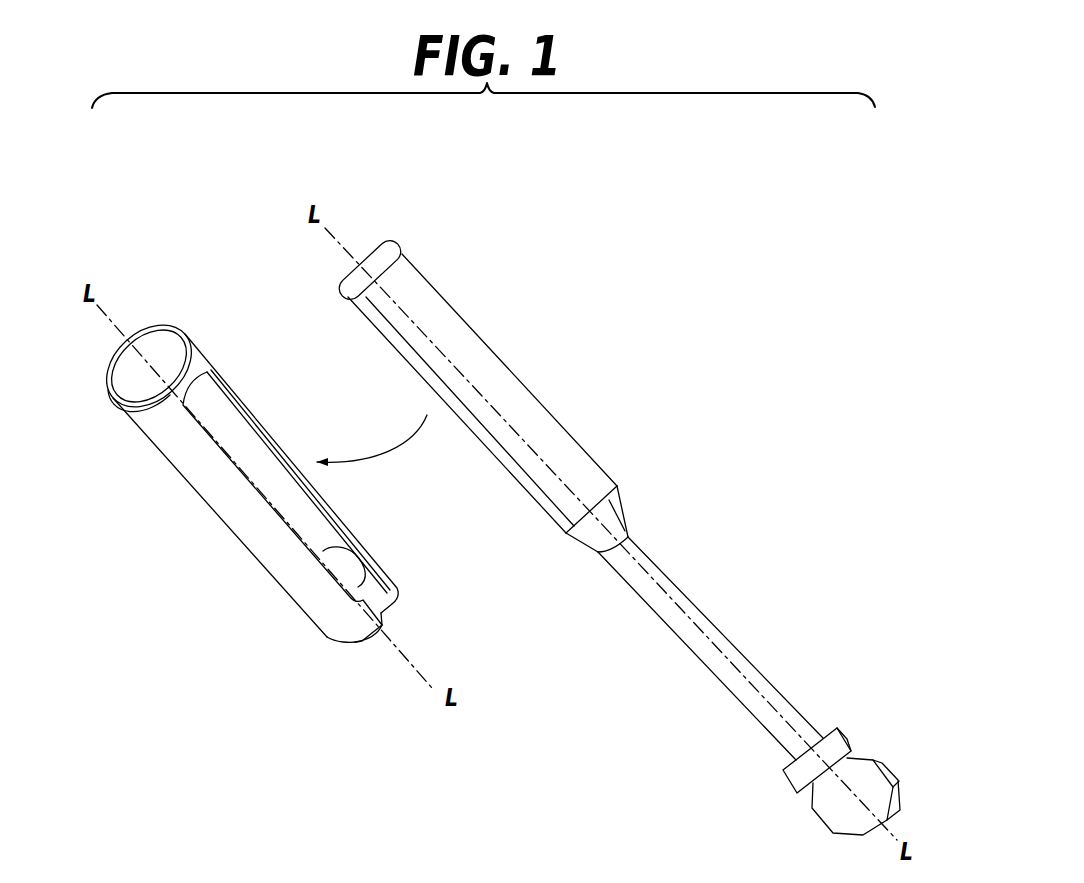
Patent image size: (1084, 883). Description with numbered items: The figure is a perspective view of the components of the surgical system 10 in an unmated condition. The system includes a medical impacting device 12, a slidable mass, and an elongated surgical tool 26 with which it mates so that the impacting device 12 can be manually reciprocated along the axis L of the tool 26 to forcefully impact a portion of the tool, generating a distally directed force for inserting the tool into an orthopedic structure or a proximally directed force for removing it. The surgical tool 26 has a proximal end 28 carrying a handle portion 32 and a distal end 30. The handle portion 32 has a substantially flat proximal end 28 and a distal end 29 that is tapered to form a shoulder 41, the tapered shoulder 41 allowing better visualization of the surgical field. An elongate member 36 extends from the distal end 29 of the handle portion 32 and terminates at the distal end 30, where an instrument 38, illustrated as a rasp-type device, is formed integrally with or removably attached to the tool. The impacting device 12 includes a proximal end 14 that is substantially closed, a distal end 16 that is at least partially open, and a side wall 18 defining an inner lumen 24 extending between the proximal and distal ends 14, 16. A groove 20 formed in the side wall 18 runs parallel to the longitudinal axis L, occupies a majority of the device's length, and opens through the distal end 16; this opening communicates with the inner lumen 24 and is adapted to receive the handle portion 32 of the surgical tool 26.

The surgical system 10 is at (796, 331).
The medical impacting device 12 is at (155, 310).
The proximal end 14 is at (118, 412).
The distal end 16 is at (322, 645).
The side wall 18 is at (290, 553).
The groove 20 is at (228, 462).
The inner lumen 24 is at (314, 525).
The surgical tool 26 is at (770, 436).
The proximal end 28 is at (436, 257).
The distal end of the handle portion 29 is at (637, 481).
The distal end 30 is at (851, 716).
The handle portion 32 is at (548, 410).
The elongate member 36 is at (737, 641).
The instrument 38 is at (817, 823).
The tapered shoulder 41 is at (627, 515).